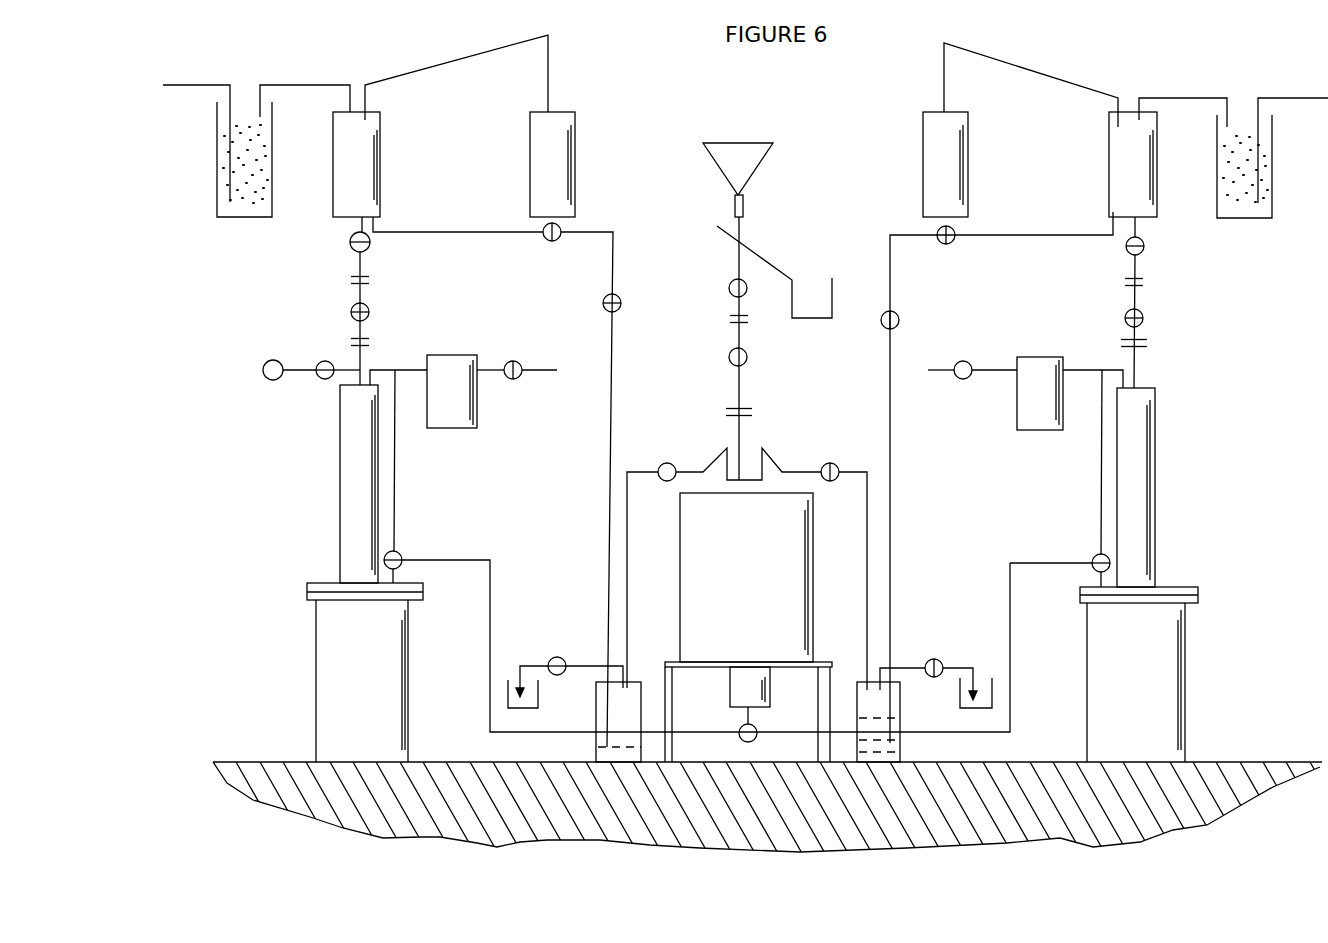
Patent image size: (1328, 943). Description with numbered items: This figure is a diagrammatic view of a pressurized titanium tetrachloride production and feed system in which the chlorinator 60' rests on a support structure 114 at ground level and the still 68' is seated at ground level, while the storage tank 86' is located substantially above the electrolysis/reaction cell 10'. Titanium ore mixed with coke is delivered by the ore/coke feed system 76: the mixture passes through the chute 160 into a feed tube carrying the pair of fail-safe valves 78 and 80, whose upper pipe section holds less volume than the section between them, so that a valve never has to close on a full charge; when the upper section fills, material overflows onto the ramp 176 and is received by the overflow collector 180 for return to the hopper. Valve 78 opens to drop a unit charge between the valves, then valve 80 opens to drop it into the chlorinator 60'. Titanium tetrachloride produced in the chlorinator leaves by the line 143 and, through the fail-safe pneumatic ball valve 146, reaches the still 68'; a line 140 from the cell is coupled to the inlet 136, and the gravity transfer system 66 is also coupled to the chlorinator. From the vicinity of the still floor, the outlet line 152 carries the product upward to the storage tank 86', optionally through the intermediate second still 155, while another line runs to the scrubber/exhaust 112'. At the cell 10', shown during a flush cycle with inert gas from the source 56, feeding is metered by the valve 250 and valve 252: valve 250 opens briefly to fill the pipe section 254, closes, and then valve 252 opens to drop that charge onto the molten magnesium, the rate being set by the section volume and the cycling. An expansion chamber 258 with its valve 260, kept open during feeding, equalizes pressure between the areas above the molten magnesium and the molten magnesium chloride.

The electrolysis/reaction cell 10' is at (342, 573).
The inert gas source 56 is at (273, 380).
The chlorinator 60' is at (769, 577).
The gravity transfer system 66 is at (648, 456).
The still 68' is at (595, 722).
The ore/coke feed system 76 is at (718, 330).
The fail-safe valve 78 is at (747, 286).
The fail-safe valve 80 is at (747, 358).
The titanium tetrachloride storage tank 86' is at (379, 164).
The scrubber/exhaust 112' is at (221, 159).
The support structure 114 is at (697, 673).
The inlet 136 is at (752, 727).
The line 140 is at (707, 732).
The line 143 is at (702, 472).
The fail-safe pneumatic ball valve 146 is at (665, 482).
The outlet line 152 is at (613, 262).
The second still 155 is at (575, 153).
The chute 160 is at (765, 176).
The overflow ramp 176 is at (768, 258).
The overflow collector 180 is at (817, 318).
The valve 250 is at (350, 246).
The valve 252 is at (351, 312).
The pipe section 254 is at (363, 262).
The expansion chamber 258 is at (500, 400).
The valve 260 is at (400, 552).